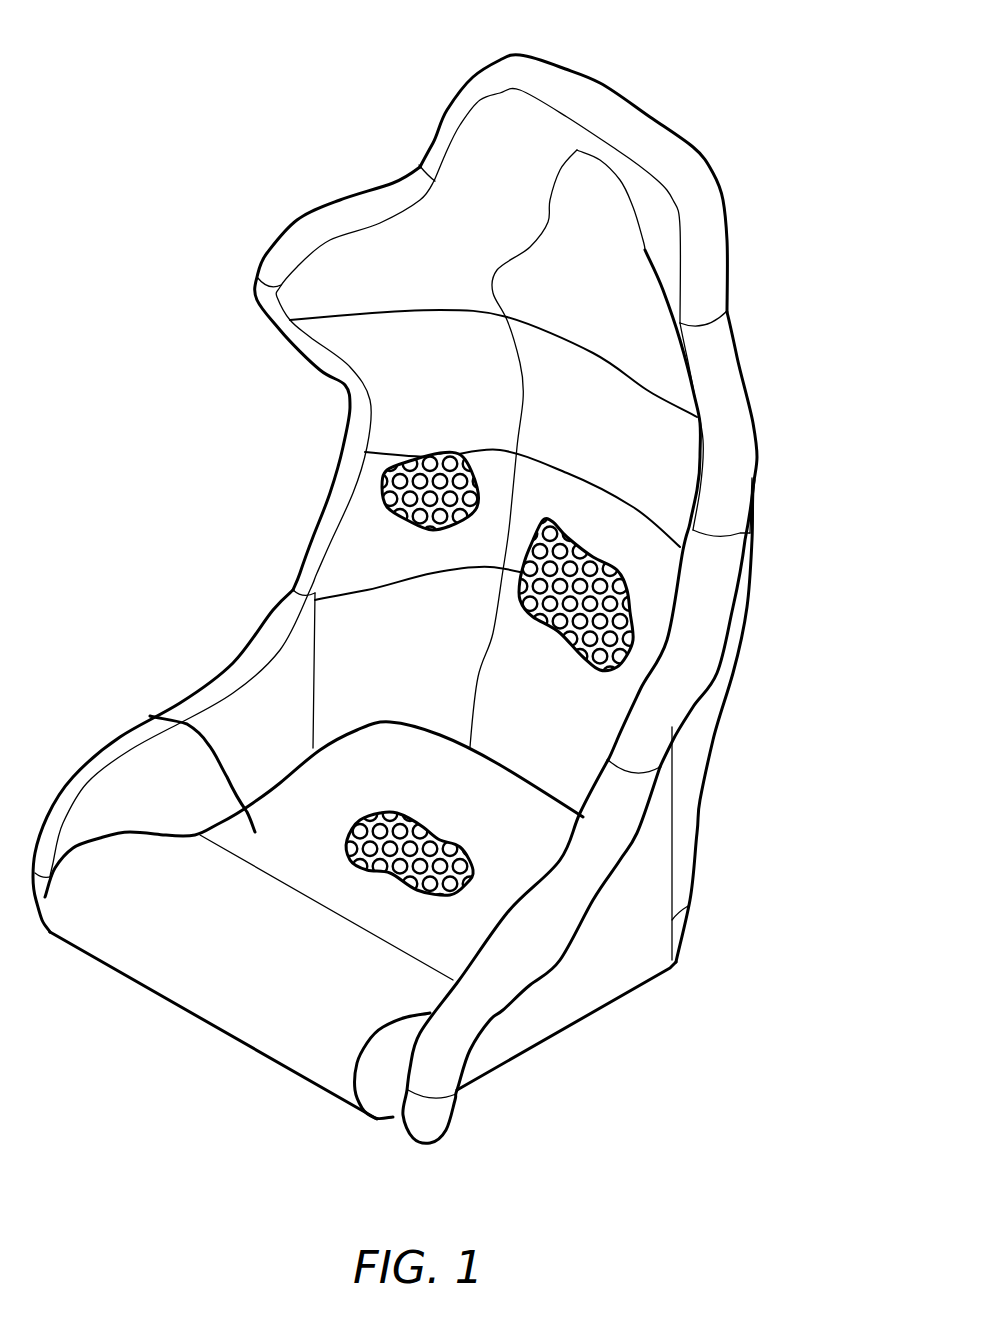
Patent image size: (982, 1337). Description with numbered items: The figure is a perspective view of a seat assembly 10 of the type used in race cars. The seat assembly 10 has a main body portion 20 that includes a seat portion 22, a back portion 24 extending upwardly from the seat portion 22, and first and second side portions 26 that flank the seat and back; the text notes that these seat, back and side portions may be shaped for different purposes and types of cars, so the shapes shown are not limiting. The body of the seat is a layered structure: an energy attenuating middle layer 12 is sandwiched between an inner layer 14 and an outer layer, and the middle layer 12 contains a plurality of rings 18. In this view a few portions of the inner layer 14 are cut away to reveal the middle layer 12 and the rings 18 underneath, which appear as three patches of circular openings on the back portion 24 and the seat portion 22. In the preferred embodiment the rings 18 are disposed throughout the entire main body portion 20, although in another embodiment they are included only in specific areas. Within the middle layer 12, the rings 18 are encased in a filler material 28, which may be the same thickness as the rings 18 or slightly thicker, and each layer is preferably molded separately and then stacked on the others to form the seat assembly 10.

The seat assembly 10 is at (285, 88).
The middle layer 12 is at (350, 503).
The inner layer 14 is at (153, 717).
The rings 18 is at (408, 478).
The main body portion 20 is at (650, 140).
The seat portion 22 is at (137, 900).
The back portion 24 is at (660, 427).
The first and second side portions 26 is at (237, 677).
The filler material 28 is at (605, 590).